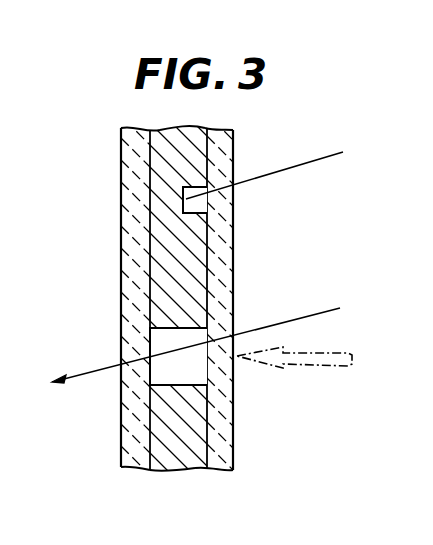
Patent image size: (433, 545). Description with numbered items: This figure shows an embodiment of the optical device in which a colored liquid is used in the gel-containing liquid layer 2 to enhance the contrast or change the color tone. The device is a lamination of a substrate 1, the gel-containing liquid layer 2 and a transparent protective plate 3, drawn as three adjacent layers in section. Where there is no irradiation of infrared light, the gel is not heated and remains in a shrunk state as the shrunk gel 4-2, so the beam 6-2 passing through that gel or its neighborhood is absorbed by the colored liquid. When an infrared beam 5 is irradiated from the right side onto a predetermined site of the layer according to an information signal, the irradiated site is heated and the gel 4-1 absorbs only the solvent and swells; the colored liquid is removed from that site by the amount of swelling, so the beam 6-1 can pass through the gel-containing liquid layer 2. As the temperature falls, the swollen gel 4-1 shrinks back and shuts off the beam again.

The substrate 1 is at (225, 473).
The gel-containing liquid layer 2 is at (178, 465).
The transparent protective plate 3 is at (133, 471).
The swollen gel 4-1 is at (148, 372).
The shrunk gel 4-2 is at (207, 209).
The infrared beam 5 is at (342, 354).
The beam passing through swollen gel 6-1 is at (308, 312).
The beam absorbed at shrunk gel 6-2 is at (301, 163).